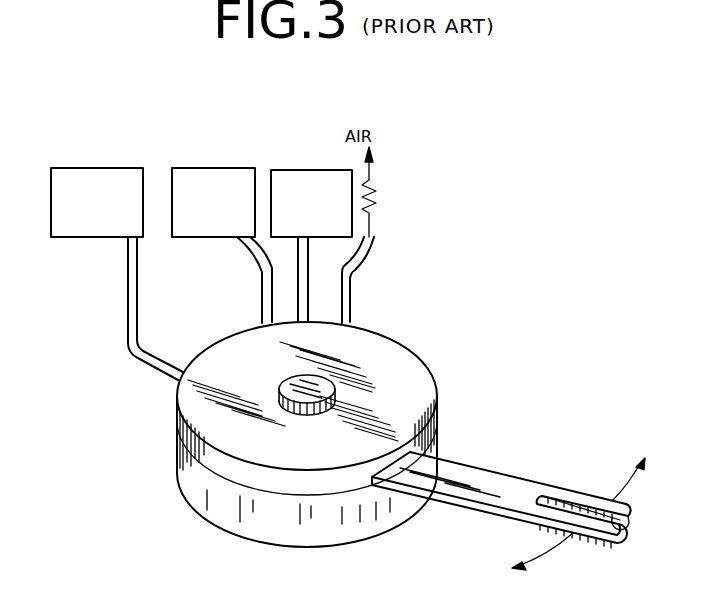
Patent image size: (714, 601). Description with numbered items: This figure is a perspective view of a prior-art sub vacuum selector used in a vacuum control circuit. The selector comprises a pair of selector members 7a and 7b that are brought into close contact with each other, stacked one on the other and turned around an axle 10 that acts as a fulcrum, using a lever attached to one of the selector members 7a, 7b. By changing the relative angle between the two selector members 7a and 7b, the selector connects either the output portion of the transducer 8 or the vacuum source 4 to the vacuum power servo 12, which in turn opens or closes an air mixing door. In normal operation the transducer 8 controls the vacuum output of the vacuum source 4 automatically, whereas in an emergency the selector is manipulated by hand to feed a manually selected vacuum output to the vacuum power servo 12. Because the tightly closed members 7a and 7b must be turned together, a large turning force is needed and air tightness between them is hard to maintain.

The vacuum source 4 is at (95, 167).
The transducer 8 is at (220, 167).
The vacuum power servo 12 is at (310, 170).
The selector member 7a is at (205, 410).
The selector member 7b is at (206, 503).
The axle 10 is at (310, 392).